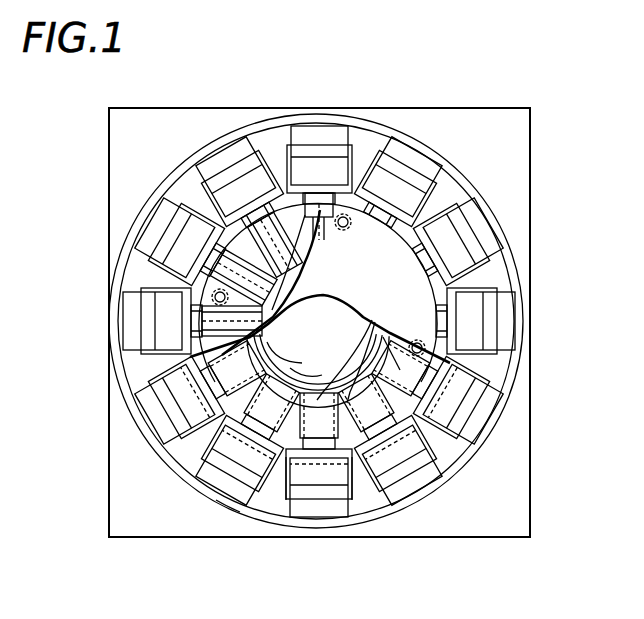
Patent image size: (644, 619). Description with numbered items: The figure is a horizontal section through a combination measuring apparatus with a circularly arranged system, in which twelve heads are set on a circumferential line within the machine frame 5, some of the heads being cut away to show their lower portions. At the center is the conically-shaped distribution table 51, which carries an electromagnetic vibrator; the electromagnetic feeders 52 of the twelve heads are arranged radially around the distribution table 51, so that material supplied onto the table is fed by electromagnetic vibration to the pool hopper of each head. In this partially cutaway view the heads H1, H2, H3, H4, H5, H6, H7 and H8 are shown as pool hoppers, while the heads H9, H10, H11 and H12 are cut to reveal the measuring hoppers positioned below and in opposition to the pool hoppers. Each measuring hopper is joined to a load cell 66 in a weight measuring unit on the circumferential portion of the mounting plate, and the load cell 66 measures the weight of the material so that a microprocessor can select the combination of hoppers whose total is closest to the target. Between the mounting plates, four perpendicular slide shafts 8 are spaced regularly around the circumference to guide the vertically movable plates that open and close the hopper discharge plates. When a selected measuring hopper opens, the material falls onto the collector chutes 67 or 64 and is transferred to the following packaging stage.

The machine frame 5 is at (475, 520).
The slide shaft 8 is at (212, 293).
The distribution table 51 is at (327, 314).
The electromagnetic feeder 52 is at (372, 327).
The collector chute 64 is at (277, 503).
The load cell 66 is at (284, 262).
The collector chute 67 is at (228, 507).
The pool hopper H1 is at (412, 162).
The pool hopper H2 is at (490, 242).
The pool hopper H3 is at (500, 320).
The pool hopper H4 is at (482, 408).
The pool hopper H5 is at (410, 487).
The pool hopper H6 is at (323, 513).
The pool hopper H7 is at (217, 482).
The pool hopper H8 is at (160, 405).
The measuring hopper H9 is at (150, 322).
The measuring hopper H10 is at (165, 230).
The measuring hopper H11 is at (228, 158).
The measuring hopper H12 is at (322, 135).